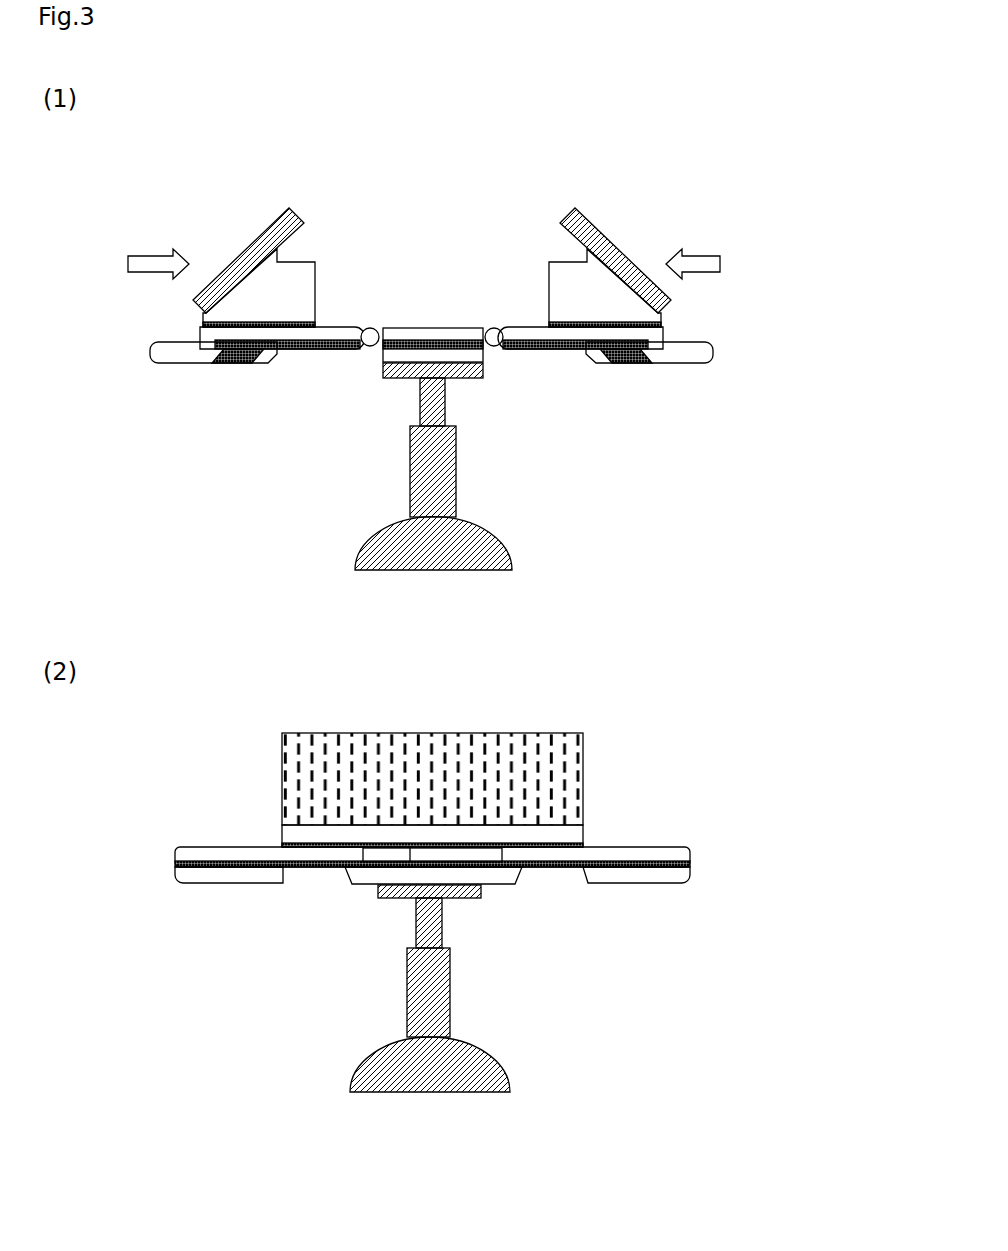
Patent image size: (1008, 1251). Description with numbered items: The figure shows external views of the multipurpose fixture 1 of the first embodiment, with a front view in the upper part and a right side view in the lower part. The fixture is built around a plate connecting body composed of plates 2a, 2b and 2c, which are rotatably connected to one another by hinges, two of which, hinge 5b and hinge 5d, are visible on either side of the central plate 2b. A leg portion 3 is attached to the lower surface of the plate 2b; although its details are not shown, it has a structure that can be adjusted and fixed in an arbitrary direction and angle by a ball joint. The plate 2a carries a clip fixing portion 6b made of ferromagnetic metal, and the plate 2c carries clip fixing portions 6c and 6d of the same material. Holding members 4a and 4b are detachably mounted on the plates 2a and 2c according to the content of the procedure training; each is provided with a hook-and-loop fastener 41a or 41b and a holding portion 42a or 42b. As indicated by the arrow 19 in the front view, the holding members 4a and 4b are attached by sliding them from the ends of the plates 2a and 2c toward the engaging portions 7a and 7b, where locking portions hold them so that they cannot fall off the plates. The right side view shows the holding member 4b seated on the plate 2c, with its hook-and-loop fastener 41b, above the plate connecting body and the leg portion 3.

The multipurpose fixture 1 is at (798, 200).
The arrow 19 is at (128, 258).
The holding member 4a is at (275, 241).
The holding member 4b is at (500, 500).
The hook-and-loop fastener 41a is at (244, 251).
The hook-and-loop fastener 41b is at (620, 248).
The holding portion 42a is at (293, 285).
The holding portion 42b is at (575, 287).
The plate 2a is at (297, 350).
The plate 2b is at (414, 330).
The plate 2c is at (565, 350).
The hinge 5b is at (370, 348).
The hinge 5d is at (494, 348).
The clip fixing portion 6b is at (173, 352).
The clip fixing portion 6c is at (633, 878).
The clip fixing portion 6d is at (690, 352).
The engaging portion 7a is at (230, 350).
The engaging portion 7b is at (627, 352).
The leg portion 3 is at (435, 497).